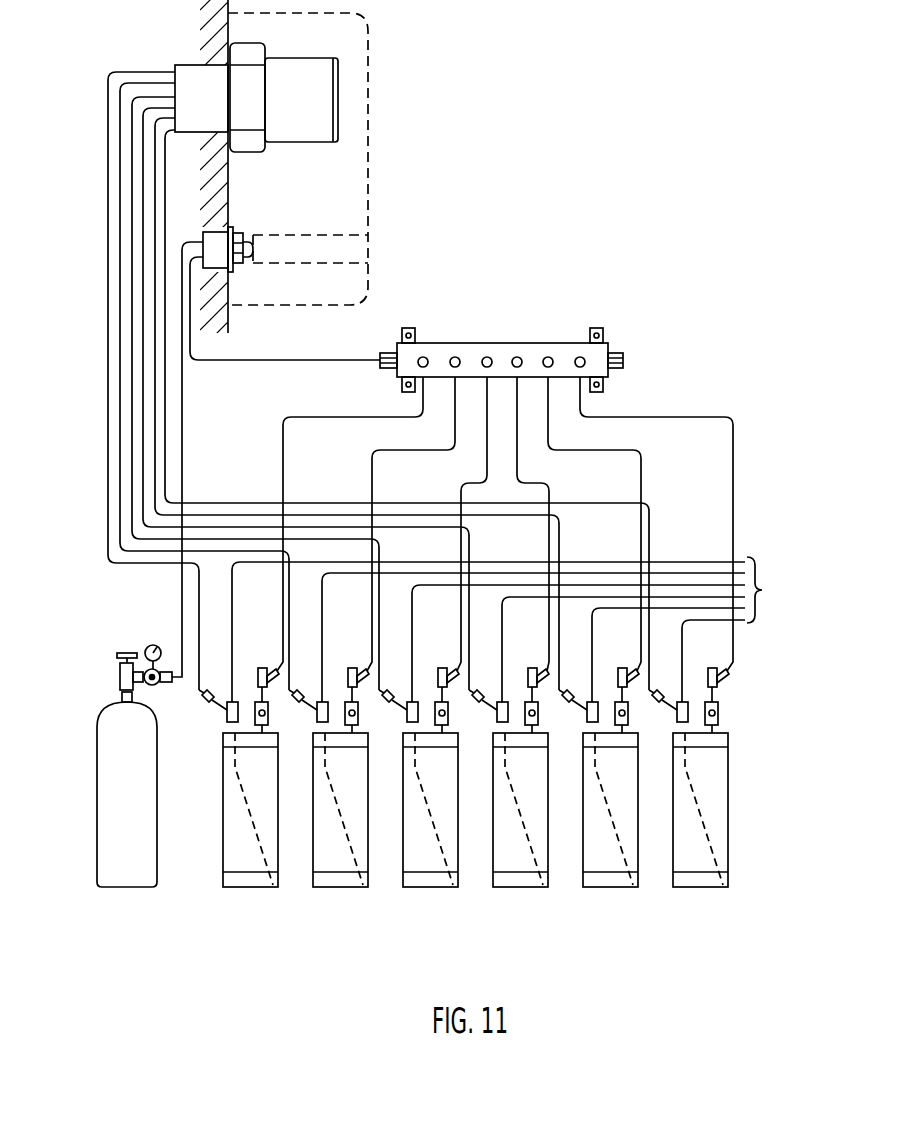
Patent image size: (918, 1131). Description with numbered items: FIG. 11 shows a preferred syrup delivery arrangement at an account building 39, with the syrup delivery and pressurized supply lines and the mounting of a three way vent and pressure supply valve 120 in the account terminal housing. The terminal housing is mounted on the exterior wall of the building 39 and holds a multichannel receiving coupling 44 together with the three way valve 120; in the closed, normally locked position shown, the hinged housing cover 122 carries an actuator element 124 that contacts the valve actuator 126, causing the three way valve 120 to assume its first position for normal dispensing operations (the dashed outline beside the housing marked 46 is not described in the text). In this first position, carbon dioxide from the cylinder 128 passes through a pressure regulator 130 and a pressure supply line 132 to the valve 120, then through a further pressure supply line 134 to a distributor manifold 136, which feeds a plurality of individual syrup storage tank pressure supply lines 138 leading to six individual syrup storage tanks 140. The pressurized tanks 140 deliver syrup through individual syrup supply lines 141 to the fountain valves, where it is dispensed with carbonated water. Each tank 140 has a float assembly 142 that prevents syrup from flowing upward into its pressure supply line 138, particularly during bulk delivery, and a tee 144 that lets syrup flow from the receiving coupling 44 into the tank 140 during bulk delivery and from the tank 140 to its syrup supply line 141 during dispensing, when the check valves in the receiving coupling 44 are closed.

The account building 39 is at (191, 57).
The receiving coupling 44 is at (283, 56).
The beverage dispenser 46 is at (378, 51).
The three way valve 120 is at (232, 227).
The housing cover 122 is at (368, 140).
The actuator element 124 is at (338, 234).
The valve actuator 126 is at (246, 263).
The carbon dioxide cylinder 128 is at (143, 792).
The pressure regulator 130 is at (158, 688).
The pressure supply line 132 is at (184, 390).
The pressure supply line 134 is at (298, 358).
The distributor manifold 136 is at (484, 342).
The syrup storage tank pressure supply lines 138 is at (336, 415).
The syrup storage tanks 140 is at (273, 769).
The syrup supply lines 141 is at (234, 604).
The float assembly 142 is at (268, 717).
The tee 144 is at (215, 697).